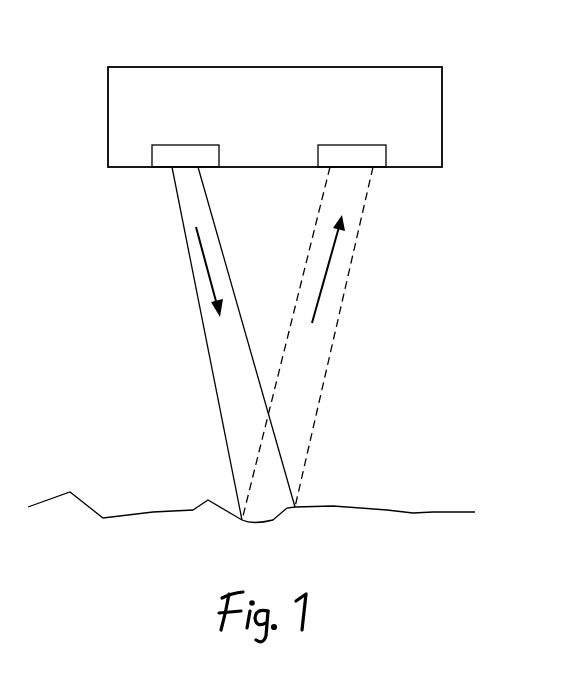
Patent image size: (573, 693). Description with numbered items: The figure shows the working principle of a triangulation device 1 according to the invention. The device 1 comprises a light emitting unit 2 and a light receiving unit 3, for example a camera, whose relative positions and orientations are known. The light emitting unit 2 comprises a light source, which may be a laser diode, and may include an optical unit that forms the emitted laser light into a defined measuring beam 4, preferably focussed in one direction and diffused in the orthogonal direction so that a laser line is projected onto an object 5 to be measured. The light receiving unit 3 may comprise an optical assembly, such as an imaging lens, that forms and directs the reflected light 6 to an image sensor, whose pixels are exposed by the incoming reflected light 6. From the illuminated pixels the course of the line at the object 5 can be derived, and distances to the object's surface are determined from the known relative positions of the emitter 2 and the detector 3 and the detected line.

The triangulation device 1 is at (305, 93).
The light emitting unit 2 is at (138, 137).
The light receiving unit 3 is at (399, 140).
The measuring beam 4 is at (197, 343).
The object 5 is at (251, 491).
The reflected light 6 is at (342, 343).